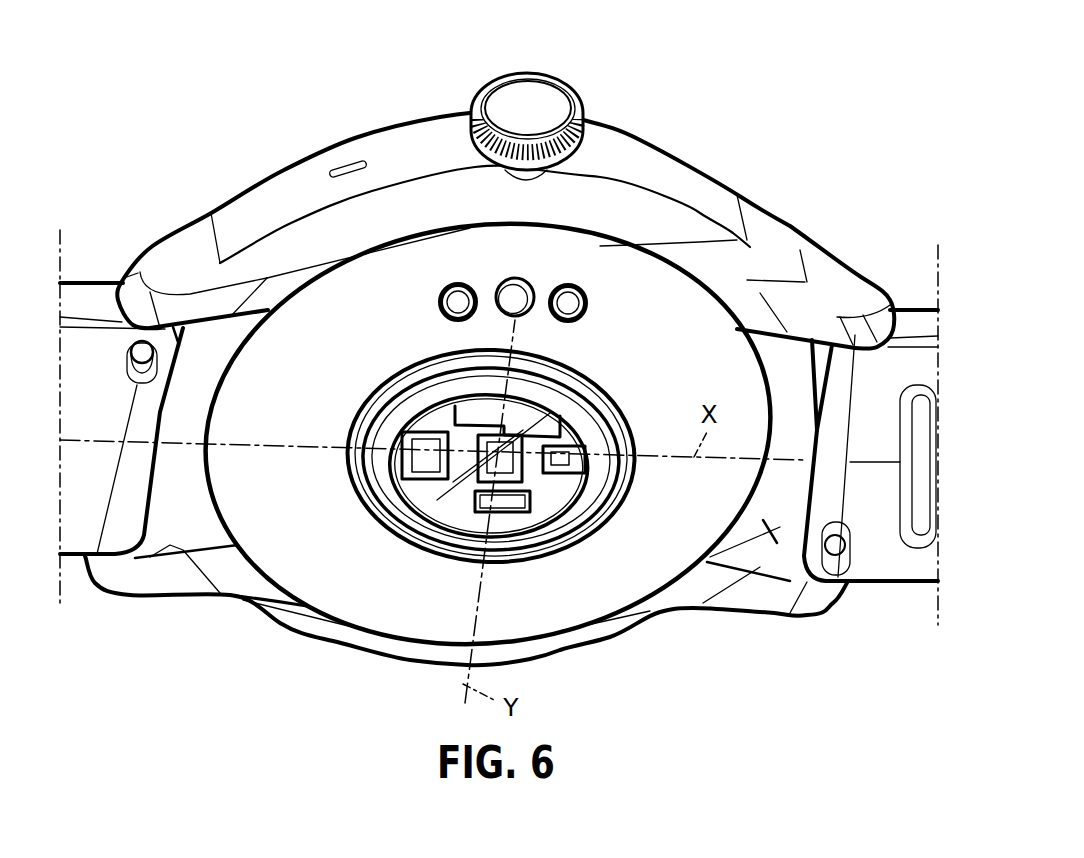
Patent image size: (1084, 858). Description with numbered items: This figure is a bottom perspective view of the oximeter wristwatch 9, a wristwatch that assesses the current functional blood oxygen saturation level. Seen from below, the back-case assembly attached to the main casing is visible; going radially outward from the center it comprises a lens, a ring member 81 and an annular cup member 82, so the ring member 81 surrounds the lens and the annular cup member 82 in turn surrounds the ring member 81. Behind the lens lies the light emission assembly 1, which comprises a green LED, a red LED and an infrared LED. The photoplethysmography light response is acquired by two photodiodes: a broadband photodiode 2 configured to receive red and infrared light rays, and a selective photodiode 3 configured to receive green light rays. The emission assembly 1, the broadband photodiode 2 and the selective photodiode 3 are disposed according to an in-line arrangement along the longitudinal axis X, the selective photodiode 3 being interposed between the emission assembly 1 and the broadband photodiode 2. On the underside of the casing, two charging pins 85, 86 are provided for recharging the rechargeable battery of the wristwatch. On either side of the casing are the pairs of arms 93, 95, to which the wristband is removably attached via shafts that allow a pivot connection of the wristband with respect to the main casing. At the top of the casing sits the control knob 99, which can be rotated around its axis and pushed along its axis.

The light emission assembly 1 is at (571, 472).
The broadband photodiode 2 is at (415, 480).
The selective photodiode 3 is at (486, 484).
The oximeter wristwatch 9 is at (786, 178).
The ring member 81 is at (528, 550).
The annular cup member 82 is at (627, 567).
The charging pin 85 is at (455, 298).
The charging pin 86 is at (569, 298).
The pair of arms 93 is at (168, 270).
The pair of arms 95 is at (852, 291).
The control knob 99 is at (538, 76).